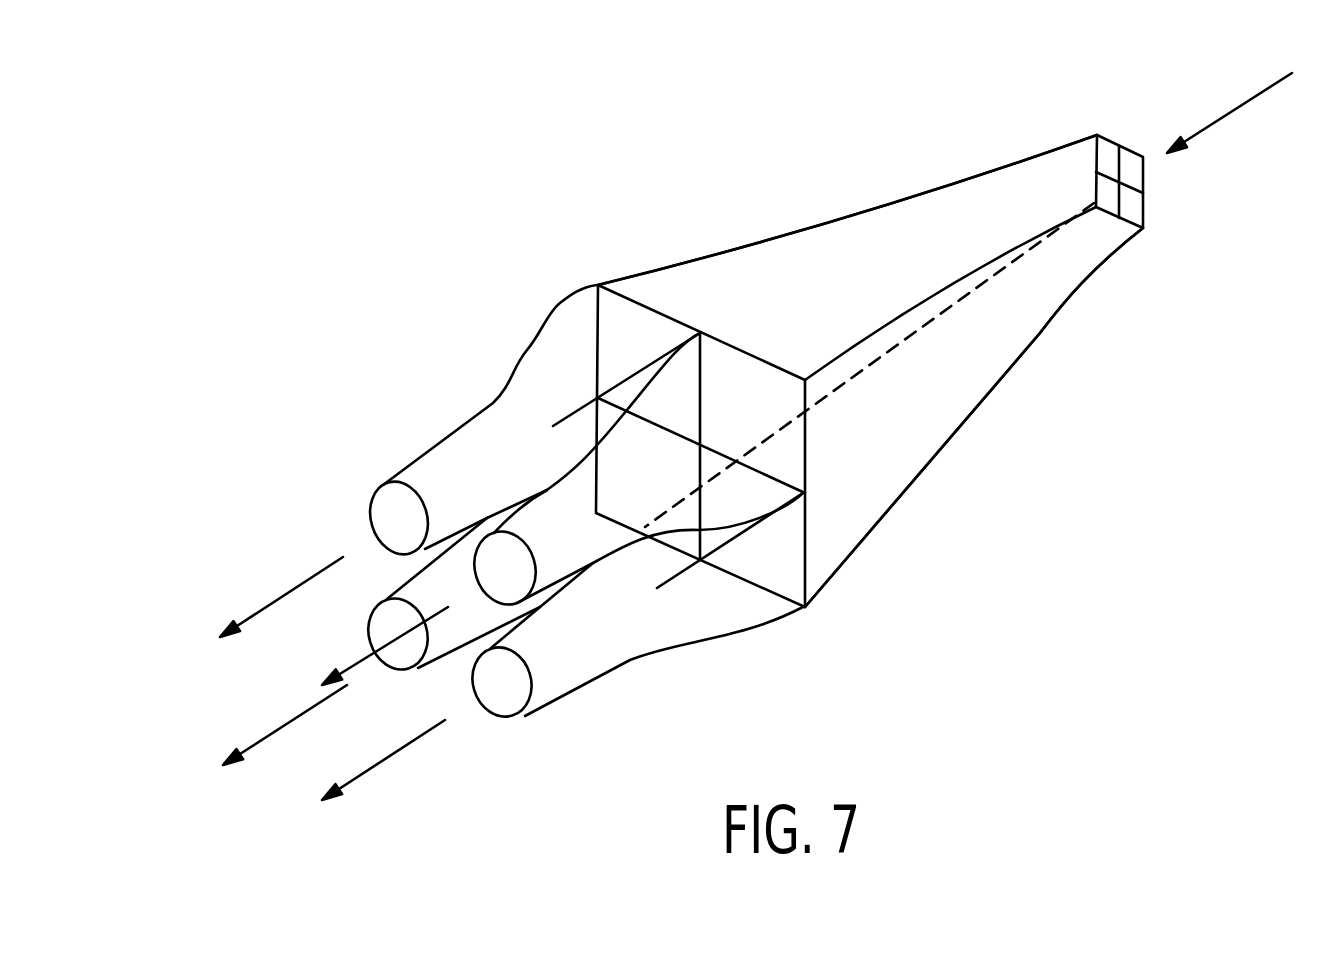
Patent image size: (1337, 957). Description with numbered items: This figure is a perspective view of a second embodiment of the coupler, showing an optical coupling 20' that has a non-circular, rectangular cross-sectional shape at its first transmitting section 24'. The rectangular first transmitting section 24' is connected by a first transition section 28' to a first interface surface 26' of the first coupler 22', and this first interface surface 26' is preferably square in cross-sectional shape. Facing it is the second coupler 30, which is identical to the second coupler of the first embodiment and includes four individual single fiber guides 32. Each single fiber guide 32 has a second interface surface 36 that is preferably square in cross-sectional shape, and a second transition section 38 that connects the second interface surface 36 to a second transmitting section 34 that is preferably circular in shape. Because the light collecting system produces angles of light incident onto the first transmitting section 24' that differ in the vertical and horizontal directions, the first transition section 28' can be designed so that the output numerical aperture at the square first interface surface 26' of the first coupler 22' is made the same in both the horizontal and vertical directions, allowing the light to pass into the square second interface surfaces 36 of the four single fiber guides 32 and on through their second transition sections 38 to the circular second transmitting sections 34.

The optical coupling 20' is at (804, 324).
The first coupler 22' is at (847, 243).
The first transmitting section 24' is at (1158, 181).
The first interface surface 26' is at (823, 412).
The first transition section 28' is at (974, 417).
The second coupler 30 is at (446, 377).
The single fiber guides 32 is at (652, 632).
The second transmitting section 34 is at (523, 717).
The second interface surface 36 is at (790, 545).
The second transition section 38 is at (593, 678).